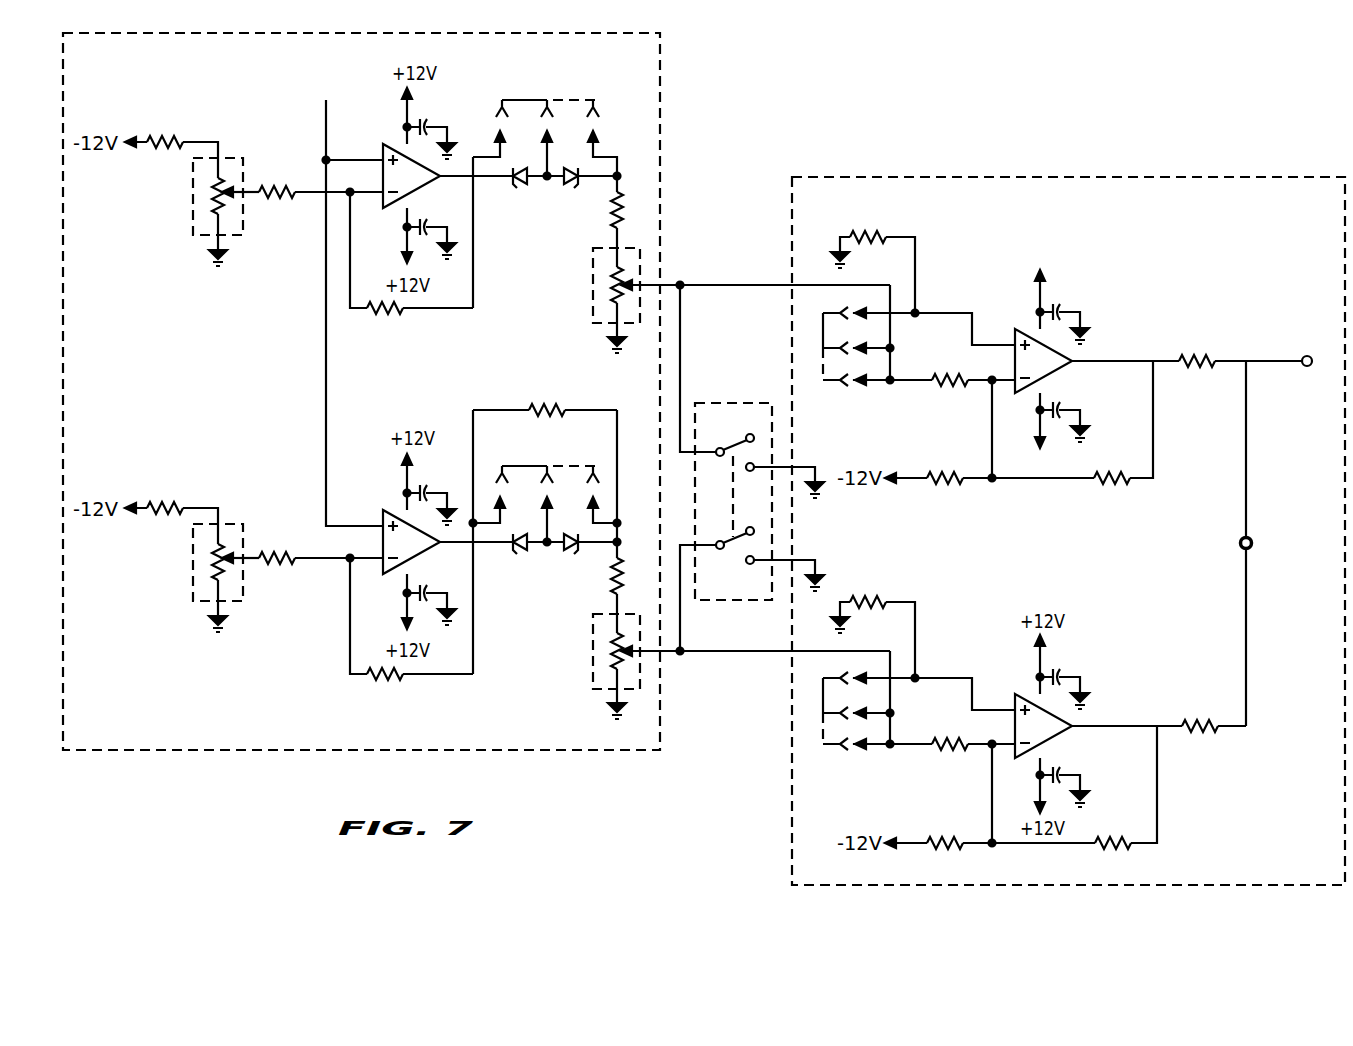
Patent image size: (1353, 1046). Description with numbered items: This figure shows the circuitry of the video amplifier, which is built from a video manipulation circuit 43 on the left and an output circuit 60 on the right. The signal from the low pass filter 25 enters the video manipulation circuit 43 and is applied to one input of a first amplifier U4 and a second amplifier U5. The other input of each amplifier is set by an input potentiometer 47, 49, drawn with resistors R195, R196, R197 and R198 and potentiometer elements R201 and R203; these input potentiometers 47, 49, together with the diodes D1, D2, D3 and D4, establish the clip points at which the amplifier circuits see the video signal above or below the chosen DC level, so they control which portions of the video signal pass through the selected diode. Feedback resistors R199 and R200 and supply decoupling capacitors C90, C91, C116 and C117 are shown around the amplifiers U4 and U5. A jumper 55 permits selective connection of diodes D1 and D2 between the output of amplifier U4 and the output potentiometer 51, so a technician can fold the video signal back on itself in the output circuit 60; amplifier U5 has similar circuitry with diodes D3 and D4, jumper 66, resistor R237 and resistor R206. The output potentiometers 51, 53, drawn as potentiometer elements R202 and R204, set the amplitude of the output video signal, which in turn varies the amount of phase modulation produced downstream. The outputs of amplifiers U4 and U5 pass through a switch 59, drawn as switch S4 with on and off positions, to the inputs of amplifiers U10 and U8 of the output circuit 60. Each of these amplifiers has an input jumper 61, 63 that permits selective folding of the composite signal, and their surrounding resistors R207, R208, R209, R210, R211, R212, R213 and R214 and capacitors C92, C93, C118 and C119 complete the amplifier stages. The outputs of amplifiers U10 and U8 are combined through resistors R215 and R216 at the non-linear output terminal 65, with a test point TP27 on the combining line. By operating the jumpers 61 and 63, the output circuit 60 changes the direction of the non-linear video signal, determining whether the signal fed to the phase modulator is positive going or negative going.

The video manipulation circuit 43 is at (670, 128).
The low pass filter 25 is at (325, 282).
The resistor R195 is at (178, 137).
The resistor R196 is at (178, 503).
The resistor R197 is at (281, 187).
The resistor R198 is at (281, 553).
The feedback resistor R199 is at (387, 315).
The feedback resistor R200 is at (386, 683).
The potentiometer R201 is at (221, 190).
The potentiometer R203 is at (221, 556).
The input potentiometer 47 is at (201, 240).
The input potentiometer 49 is at (201, 605).
The first amplifier U4 is at (385, 150).
The second amplifier U5 is at (385, 516).
The capacitor C90 is at (431, 120).
The capacitor C91 is at (431, 223).
The capacitor C116 is at (445, 471).
The capacitor C117 is at (431, 589).
The jumper 55 is at (532, 100).
The jumper 66 is at (532, 466).
The diode D1 is at (517, 195).
The diode D2 is at (574, 195).
The diode D3 is at (512, 560).
The diode D4 is at (562, 560).
The resistor R237 is at (560, 405).
The resistor R206 is at (613, 586).
The potentiometer R202 is at (621, 286).
The potentiometer R204 is at (621, 651).
The output potentiometer 51 is at (576, 308).
The output potentiometer 53 is at (576, 671).
The switch 59 is at (752, 468).
The switch S4 is at (730, 589).
The output circuit 60 is at (1053, 176).
The resistor R207 is at (877, 230).
The resistor R208 is at (877, 595).
The input jumper 61 is at (813, 319).
The input jumper 63 is at (814, 701).
The resistor R209 is at (930, 370).
The resistor R210 is at (930, 735).
The amplifier U10 is at (1017, 335).
The amplifier U8 is at (1017, 698).
The capacitor C92 is at (1064, 305).
The capacitor C93 is at (1064, 403).
The capacitor C118 is at (1064, 670).
The capacitor C119 is at (1064, 768).
The resistor R211 is at (947, 484).
The resistor R212 is at (945, 835).
The feedback resistor R213 is at (1110, 484).
The feedback resistor R214 is at (1113, 835).
The output resistor R215 is at (1195, 350).
The output resistor R216 is at (1197, 715).
The non-linear output terminal 65 is at (1307, 355).
The test point TP27 is at (1252, 539).